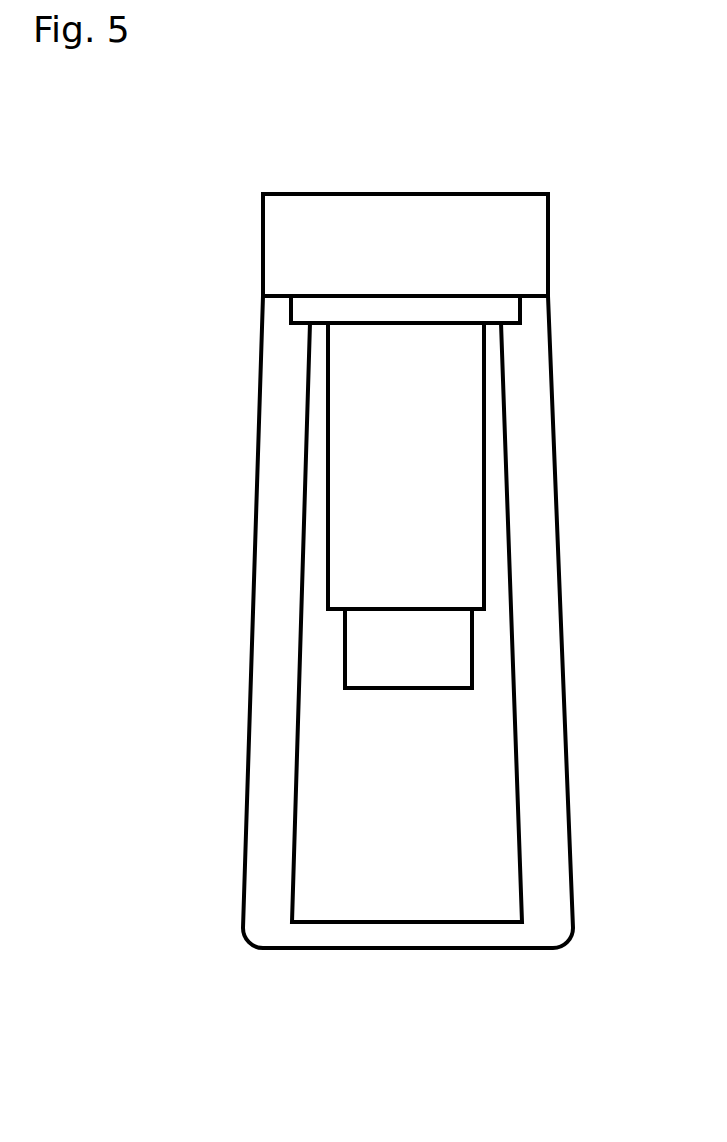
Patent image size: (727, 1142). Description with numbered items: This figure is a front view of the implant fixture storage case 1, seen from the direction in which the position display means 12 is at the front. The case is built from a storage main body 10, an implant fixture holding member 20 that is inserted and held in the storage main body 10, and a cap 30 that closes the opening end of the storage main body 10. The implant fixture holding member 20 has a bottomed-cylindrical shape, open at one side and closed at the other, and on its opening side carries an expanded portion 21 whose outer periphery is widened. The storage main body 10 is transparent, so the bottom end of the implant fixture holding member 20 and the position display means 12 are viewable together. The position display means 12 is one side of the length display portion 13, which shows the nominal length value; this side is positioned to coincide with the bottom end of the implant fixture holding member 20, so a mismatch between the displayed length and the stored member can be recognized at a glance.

The implant fixture storage case 1 is at (402, 83).
The cap 30 is at (241, 198).
The storage main body 10 is at (175, 560).
The expanded portion 21 is at (310, 310).
The implant fixture holding member 20 is at (320, 500).
The position display means 12 is at (425, 608).
The length display portion 13 is at (372, 645).